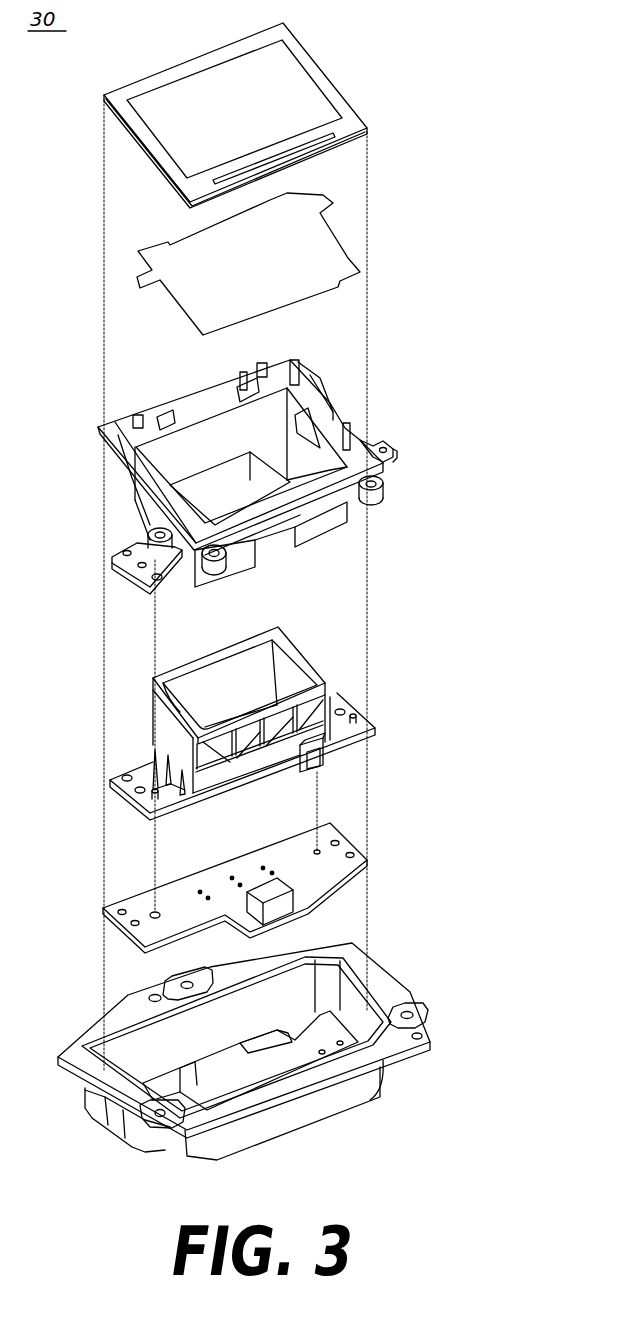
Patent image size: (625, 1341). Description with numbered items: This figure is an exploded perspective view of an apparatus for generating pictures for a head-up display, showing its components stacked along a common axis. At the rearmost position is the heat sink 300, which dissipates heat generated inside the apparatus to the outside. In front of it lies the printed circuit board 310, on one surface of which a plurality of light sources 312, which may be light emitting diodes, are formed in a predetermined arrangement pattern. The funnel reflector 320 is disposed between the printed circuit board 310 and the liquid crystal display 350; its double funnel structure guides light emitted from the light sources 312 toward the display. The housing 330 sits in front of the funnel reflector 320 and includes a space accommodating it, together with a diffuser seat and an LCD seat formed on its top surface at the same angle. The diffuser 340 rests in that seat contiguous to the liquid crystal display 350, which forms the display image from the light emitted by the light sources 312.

The heat sink 300 is at (330, 1105).
The printed circuit board 310 is at (350, 843).
The light source 312 is at (263, 868).
The funnel reflector 320 is at (375, 730).
The housing 330 is at (383, 473).
The diffuser 340 is at (348, 258).
The liquid crystal display 350 is at (337, 88).